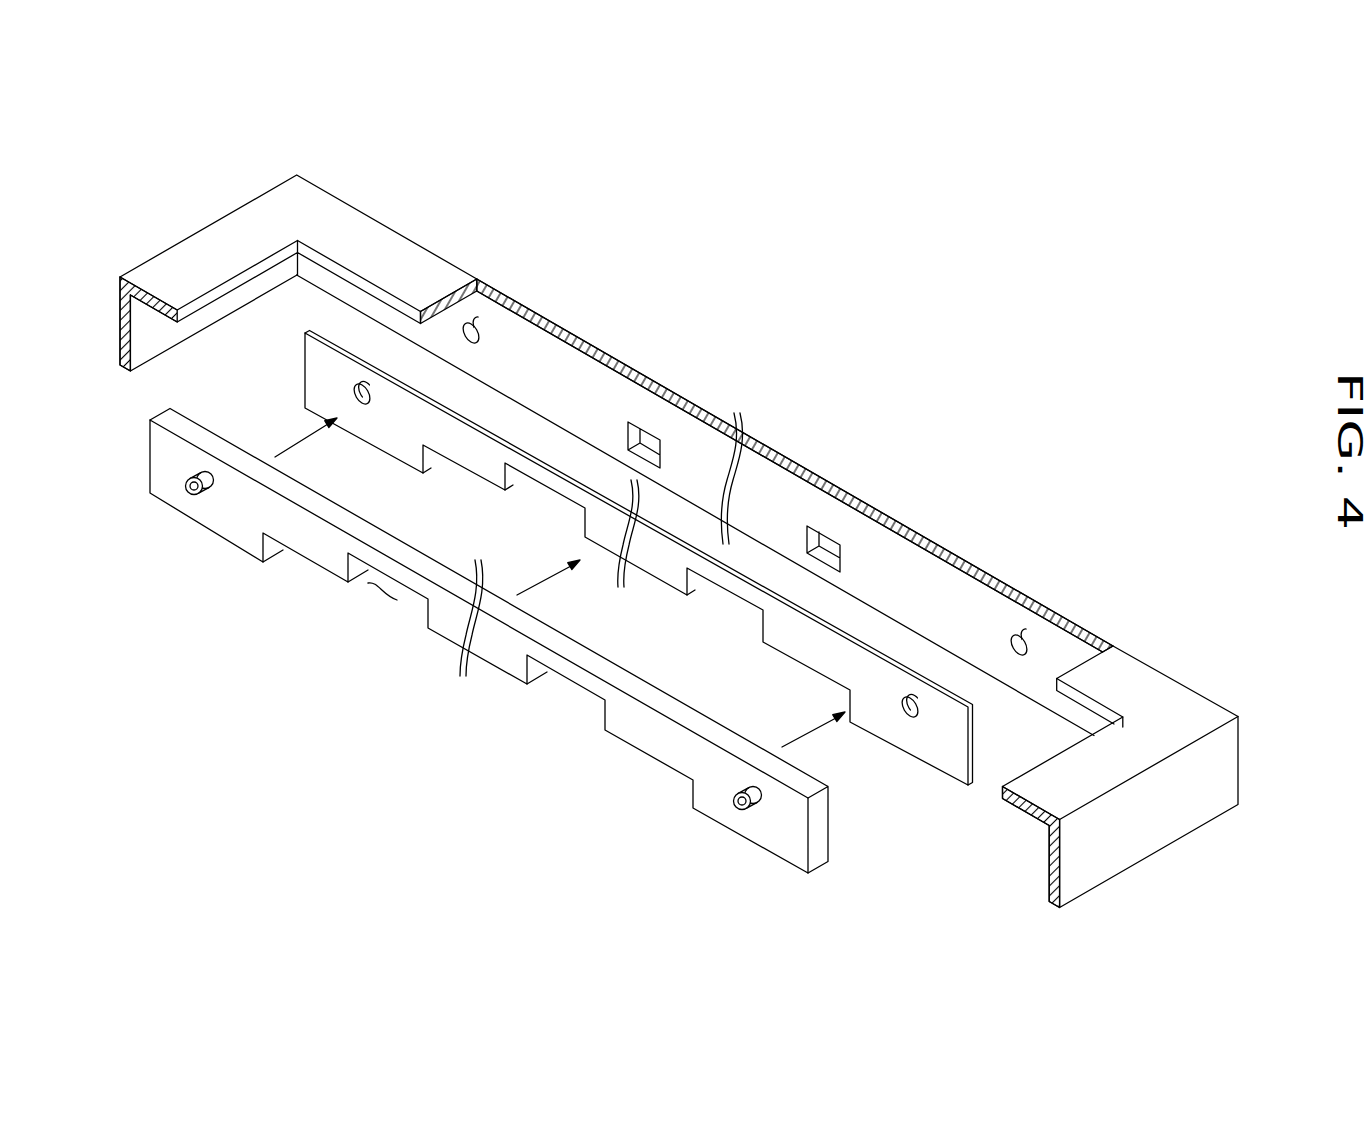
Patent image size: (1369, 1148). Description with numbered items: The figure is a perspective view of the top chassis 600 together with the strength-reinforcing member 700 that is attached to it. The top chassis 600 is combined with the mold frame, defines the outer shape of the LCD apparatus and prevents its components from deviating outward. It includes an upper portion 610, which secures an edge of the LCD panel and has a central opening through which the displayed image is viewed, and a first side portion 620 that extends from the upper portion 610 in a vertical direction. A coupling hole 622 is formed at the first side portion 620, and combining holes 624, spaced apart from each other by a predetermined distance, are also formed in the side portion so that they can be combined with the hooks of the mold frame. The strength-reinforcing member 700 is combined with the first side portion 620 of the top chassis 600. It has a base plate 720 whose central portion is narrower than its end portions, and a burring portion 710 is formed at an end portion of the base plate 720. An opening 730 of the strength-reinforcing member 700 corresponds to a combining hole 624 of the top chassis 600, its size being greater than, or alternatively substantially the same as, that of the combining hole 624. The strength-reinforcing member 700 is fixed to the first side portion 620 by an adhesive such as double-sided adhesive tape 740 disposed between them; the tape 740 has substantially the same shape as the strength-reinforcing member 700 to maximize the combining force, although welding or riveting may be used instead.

The top chassis 600 is at (408, 180).
The upper portion 610 is at (423, 270).
The first side portion 620 is at (566, 347).
The coupling hole 622 is at (470, 323).
The combining hole 624 is at (640, 443).
The strength-reinforcing member 700 is at (121, 436).
The burring portion 710 is at (187, 478).
The base plate 720 is at (246, 532).
The opening 730 is at (385, 592).
The double-sided adhesive tape 740 is at (947, 755).